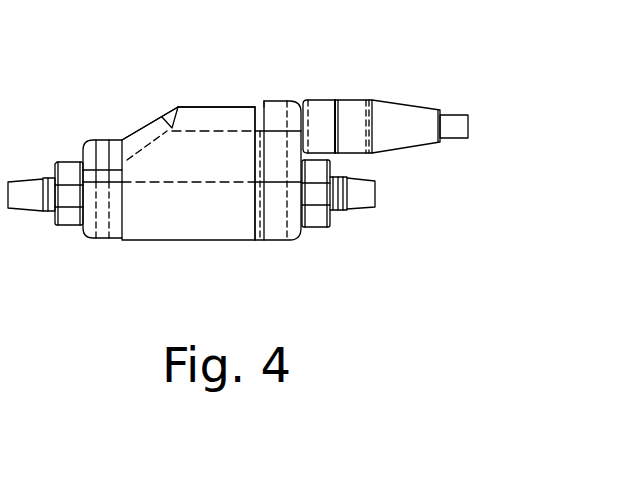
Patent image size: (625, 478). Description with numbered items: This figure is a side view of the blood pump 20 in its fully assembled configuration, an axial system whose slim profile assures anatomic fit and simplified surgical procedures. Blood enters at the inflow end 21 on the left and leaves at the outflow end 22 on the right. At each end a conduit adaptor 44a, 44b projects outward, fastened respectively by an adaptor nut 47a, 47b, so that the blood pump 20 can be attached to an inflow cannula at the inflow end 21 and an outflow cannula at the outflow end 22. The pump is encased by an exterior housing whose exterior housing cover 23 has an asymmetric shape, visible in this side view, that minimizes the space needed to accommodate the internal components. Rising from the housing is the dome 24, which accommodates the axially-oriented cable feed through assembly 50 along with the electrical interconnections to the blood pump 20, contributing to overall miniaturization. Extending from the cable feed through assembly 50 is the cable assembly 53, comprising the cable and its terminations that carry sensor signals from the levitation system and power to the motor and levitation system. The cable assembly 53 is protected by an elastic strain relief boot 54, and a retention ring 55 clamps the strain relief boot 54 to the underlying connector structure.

The blood pump 20 is at (243, 286).
The inflow end 21 is at (53, 205).
The outflow end 22 is at (393, 223).
The exterior housing cover 23 is at (142, 107).
The dome 24 is at (208, 127).
The conduit adaptor 44a is at (30, 198).
The conduit adaptor 44b is at (357, 197).
The adaptor nut 47a is at (68, 193).
The adaptor nut 47b is at (315, 198).
The cable feed through assembly 50 is at (345, 90).
The cable assembly 53 is at (452, 127).
The strain relief boot 54 is at (383, 127).
The retention ring 55 is at (350, 120).